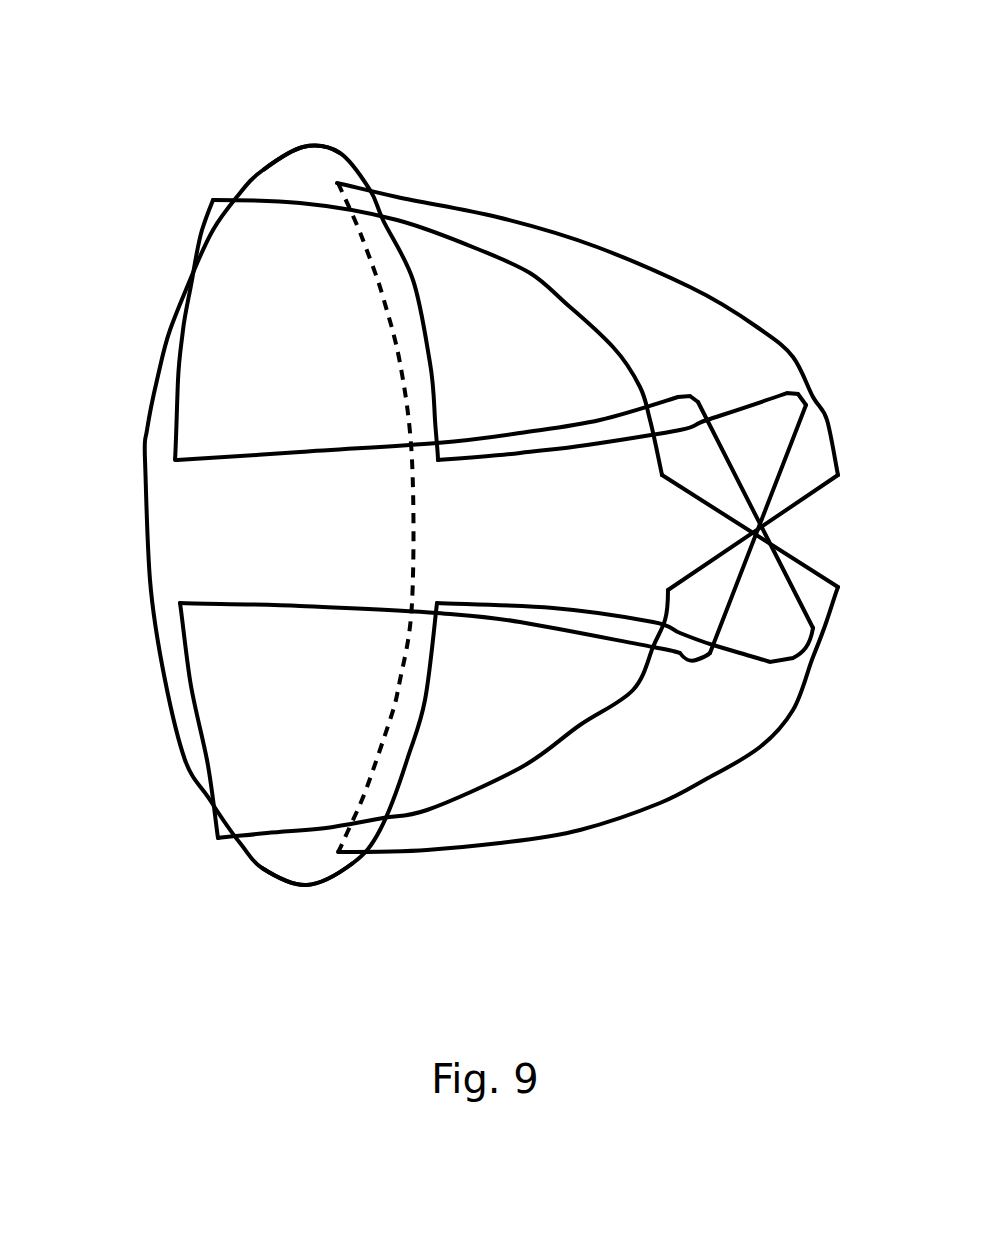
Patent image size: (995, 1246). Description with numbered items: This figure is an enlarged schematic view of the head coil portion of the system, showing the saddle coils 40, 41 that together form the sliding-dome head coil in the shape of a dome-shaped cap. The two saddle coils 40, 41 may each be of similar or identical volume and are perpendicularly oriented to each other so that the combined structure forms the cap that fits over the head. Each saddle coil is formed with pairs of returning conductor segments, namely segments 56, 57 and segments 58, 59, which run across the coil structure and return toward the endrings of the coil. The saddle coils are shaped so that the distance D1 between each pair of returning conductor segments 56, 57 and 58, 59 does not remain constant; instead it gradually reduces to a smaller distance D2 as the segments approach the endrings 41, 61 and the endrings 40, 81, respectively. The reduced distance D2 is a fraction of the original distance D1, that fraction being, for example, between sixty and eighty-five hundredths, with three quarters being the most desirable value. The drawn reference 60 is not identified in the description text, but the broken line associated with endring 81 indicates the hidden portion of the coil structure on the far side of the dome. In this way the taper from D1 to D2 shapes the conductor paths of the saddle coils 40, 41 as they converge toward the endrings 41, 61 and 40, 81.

The saddle coil 40 is at (198, 812).
The saddle coil 41 is at (327, 883).
The returning conductor segment 56 is at (208, 460).
The returning conductor segment 57 is at (313, 607).
The returning conductor segment 58 is at (692, 290).
The returning conductor segment 59 is at (545, 280).
The outer edge of the plate 60 is at (163, 345).
The endring 61 is at (305, 145).
The endring 81 is at (372, 277).
The distance between pairs of returning conductor segments D1 is at (793, 653).
The reduced distance between returning conductor segments D2 is at (331, 185).